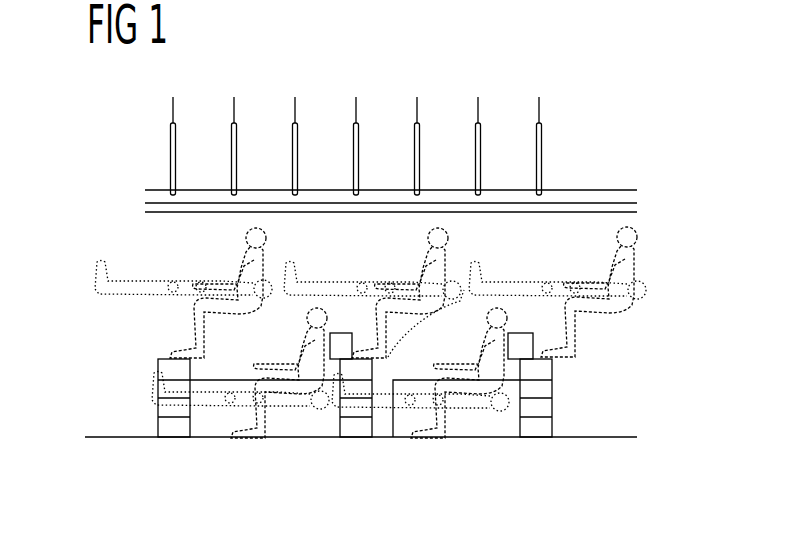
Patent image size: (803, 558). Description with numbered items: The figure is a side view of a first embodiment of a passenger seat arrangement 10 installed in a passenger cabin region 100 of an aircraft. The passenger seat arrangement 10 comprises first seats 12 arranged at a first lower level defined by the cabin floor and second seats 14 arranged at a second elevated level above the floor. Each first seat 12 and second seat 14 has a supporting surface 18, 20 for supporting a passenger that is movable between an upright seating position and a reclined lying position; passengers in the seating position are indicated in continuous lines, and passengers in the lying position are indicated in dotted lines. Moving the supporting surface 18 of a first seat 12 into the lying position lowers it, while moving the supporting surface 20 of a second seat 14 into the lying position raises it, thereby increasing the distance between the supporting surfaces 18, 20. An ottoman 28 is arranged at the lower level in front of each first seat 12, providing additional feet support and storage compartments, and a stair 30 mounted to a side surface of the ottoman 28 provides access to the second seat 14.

The passenger cabin region 100 is at (602, 108).
The passenger seat arrangement 10 is at (604, 218).
The second seat 14 is at (466, 253).
The supporting surface 20 is at (403, 340).
The supporting surface 18 is at (410, 415).
The first seat 12 is at (494, 430).
The ottoman 28 is at (356, 407).
The stair 30 is at (350, 438).